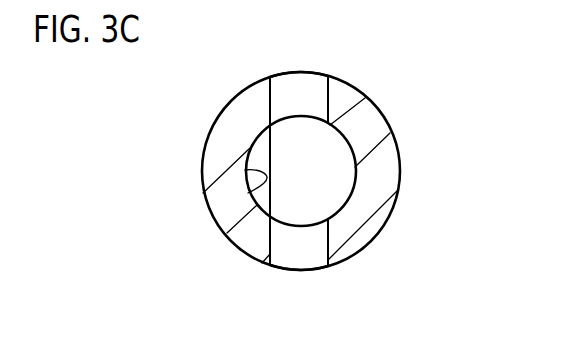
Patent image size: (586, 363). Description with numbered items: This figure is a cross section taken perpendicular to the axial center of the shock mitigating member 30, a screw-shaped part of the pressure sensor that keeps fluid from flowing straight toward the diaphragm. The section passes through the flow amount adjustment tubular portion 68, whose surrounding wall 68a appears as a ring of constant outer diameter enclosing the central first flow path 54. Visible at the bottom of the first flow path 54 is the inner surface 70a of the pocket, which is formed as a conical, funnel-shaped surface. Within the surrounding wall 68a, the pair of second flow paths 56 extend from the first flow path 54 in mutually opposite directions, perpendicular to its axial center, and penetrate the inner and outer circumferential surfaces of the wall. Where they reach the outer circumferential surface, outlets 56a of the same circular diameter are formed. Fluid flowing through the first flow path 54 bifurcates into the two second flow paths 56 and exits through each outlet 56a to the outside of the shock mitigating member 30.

The shock mitigating member 30 is at (229, 96).
The first flow path 54 is at (248, 193).
The second flow paths 56 is at (290, 82).
The outlets 56a is at (307, 72).
The flow amount adjustment tubular portion 68 is at (204, 148).
The surrounding wall 68a is at (368, 125).
The inner surface of the pocket 70a is at (333, 167).